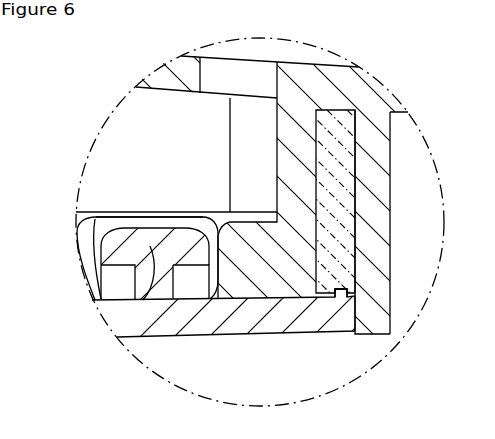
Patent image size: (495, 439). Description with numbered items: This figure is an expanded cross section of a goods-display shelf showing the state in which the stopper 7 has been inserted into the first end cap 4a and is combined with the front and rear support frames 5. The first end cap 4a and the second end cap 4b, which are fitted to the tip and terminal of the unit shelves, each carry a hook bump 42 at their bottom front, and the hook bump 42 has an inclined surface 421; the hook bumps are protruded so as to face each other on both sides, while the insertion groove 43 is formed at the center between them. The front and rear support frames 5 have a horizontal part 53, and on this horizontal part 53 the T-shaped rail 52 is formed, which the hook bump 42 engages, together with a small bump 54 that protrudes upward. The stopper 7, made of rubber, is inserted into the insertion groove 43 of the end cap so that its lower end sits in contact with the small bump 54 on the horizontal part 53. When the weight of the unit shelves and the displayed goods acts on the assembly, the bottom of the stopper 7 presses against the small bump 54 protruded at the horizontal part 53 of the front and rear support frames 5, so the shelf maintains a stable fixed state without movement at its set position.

The No.1 end cap 4a is at (400, 152).
The No.2 end cap 4b is at (402, 180).
The stopper 7 is at (355, 235).
The insertion groove 43 is at (355, 270).
The front and rear support frames 5 is at (160, 341).
The T-shaped rail 52 is at (148, 300).
The horizontal part 53 is at (270, 322).
The small bump 54 is at (342, 296).
The hook bump 42 is at (85, 279).
The inclined surface 421 is at (208, 222).